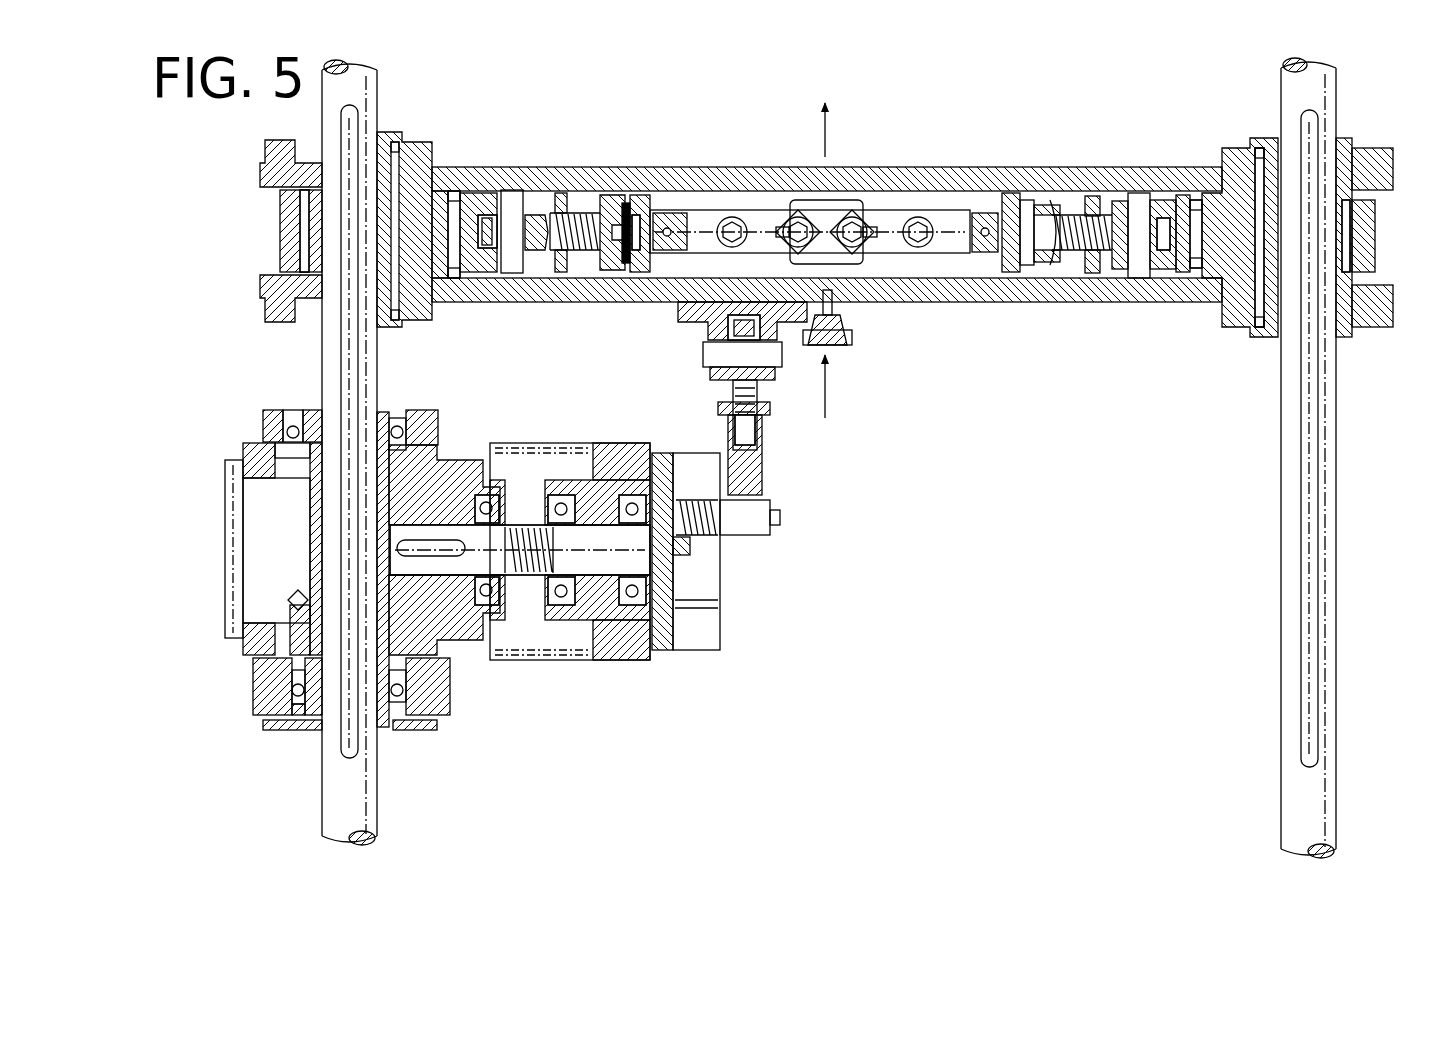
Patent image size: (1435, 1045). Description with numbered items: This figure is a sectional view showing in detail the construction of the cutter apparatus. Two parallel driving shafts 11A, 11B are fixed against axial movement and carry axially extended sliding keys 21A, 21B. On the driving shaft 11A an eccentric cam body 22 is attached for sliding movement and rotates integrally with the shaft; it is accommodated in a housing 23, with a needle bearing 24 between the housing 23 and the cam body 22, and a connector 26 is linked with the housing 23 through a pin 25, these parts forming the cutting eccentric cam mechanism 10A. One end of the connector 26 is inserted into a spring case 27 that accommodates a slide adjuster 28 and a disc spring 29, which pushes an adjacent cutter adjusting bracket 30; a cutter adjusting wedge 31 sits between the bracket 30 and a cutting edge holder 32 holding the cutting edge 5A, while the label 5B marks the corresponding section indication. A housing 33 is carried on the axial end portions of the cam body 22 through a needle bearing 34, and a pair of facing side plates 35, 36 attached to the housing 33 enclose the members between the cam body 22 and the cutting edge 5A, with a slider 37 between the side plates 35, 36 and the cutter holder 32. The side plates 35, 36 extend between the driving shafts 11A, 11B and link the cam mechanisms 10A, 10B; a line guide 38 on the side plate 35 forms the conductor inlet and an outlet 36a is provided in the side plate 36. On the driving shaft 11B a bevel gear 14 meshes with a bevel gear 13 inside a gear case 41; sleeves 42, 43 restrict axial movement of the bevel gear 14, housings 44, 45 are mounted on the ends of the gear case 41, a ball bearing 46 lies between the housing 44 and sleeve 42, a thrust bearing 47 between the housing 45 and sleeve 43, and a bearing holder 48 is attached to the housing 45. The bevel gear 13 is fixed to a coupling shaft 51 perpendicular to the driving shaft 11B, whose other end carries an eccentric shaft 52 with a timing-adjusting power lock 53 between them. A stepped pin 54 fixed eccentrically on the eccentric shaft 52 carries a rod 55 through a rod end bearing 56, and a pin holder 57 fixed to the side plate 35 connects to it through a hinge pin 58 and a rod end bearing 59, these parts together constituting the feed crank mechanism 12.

The cutting edge 5A is at (838, 197).
The section view arrow 5B is at (802, 197).
The cutting eccentric cam mechanism 10A is at (1232, 218).
The cam mechanism 10B is at (423, 213).
The driving shaft 11A is at (1302, 803).
The driving shaft 11B is at (362, 803).
The feed crank mechanism 12 is at (787, 527).
The bevel gear 13 is at (430, 497).
The bevel gear 14 is at (283, 598).
The sliding key 21A is at (1308, 738).
The sliding key 21B is at (353, 747).
The eccentric cam body 22 is at (1218, 252).
The housing 23 is at (1138, 303).
The needle bearing 24 is at (1163, 262).
The pin 25 is at (1137, 200).
The connector 26 is at (1078, 250).
The spring case 27 is at (1067, 203).
The slide adjuster 28 is at (1033, 207).
The disc spring 29 is at (1022, 262).
The cutter adjusting bracket 30 is at (1007, 210).
The cutter adjusting wedge 31 is at (986, 247).
The cutting edge holder 32 is at (946, 246).
The housing 33 is at (1240, 328).
The needle bearing 34 is at (1267, 328).
The side plate 35 is at (912, 292).
The side plate 36 is at (932, 211).
The outlet 36a is at (850, 213).
The slider 37 is at (985, 178).
The line guide 38 is at (848, 333).
The gear case 41 is at (247, 652).
The sleeve 42 is at (302, 413).
The sleeve 43 is at (315, 727).
The housing 44 is at (263, 420).
The housing 45 is at (262, 688).
The ball bearing 46 is at (297, 413).
The thrust bearing 47 is at (298, 730).
The bearing holder 48 is at (265, 732).
The coupling shaft 51 is at (567, 560).
The eccentric shaft 52 is at (702, 570).
The power lock 53 is at (703, 598).
The stepped pin 54 is at (773, 508).
The rod 55 is at (763, 462).
The rod end bearing 56 is at (775, 548).
The pin holder 57 is at (677, 304).
The hinge pin 58 is at (717, 353).
The rod end bearing 59 is at (730, 383).